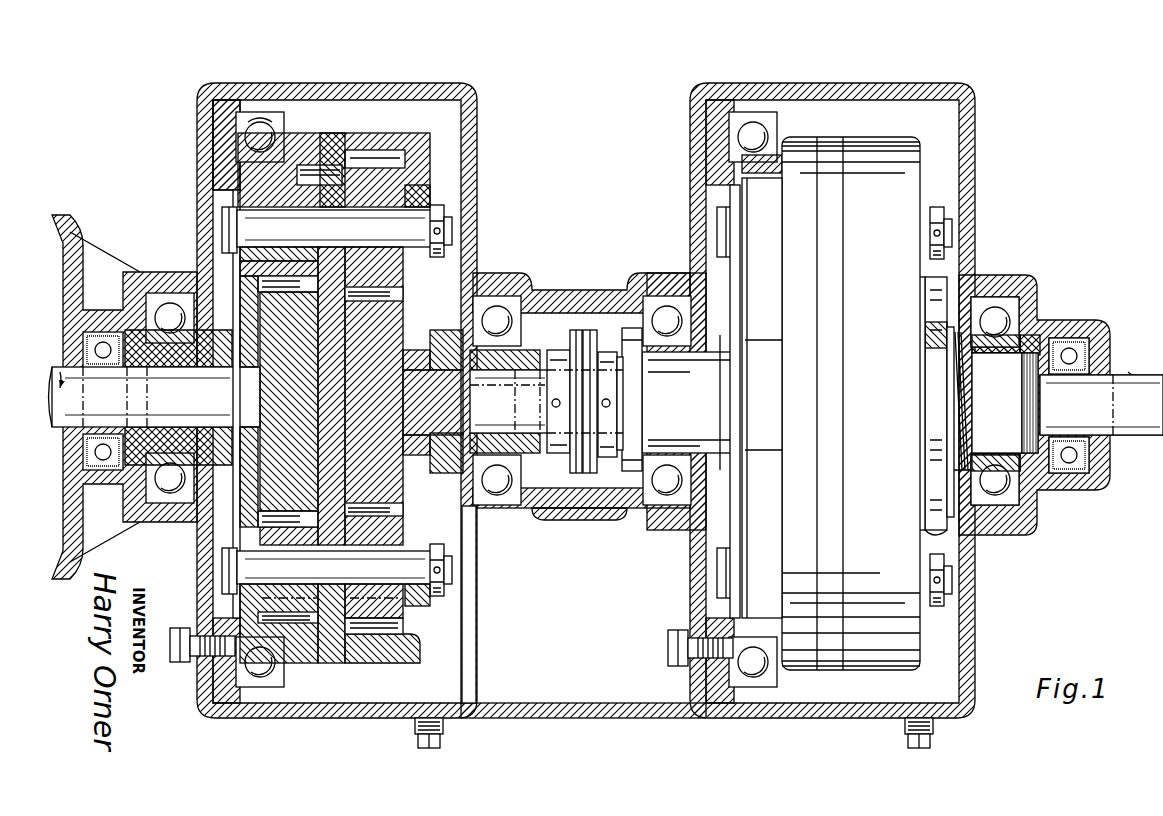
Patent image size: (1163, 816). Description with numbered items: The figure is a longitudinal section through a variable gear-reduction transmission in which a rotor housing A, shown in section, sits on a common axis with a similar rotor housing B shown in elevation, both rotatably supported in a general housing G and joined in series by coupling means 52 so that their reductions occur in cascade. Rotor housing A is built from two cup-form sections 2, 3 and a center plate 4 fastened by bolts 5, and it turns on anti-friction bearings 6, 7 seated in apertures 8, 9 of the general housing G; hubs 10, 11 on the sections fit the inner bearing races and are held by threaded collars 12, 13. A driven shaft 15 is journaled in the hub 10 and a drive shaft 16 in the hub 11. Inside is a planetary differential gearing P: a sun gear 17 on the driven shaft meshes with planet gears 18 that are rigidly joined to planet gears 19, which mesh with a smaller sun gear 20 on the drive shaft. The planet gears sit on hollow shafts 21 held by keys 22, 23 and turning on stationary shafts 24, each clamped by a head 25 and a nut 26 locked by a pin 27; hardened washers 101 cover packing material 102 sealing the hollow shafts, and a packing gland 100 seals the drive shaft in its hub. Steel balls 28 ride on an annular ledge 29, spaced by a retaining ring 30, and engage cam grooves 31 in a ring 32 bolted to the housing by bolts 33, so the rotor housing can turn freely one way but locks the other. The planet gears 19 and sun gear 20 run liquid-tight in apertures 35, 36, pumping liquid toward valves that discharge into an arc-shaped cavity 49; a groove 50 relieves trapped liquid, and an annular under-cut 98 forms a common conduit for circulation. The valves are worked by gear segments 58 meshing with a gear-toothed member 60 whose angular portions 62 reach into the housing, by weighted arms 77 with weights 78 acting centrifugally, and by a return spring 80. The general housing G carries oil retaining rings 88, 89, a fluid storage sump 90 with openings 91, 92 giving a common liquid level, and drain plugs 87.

The cup-form section 2 is at (800, 670).
The cup-form section 3 is at (405, 665).
The center plate 4 is at (828, 670).
The bolts 5 is at (955, 770).
The anti-friction bearing 6 is at (162, 526).
The anti-friction bearing 7 is at (497, 505).
The aperture 8 is at (176, 292).
The aperture 9 is at (500, 296).
The hub 10 is at (160, 365).
The hub 11 is at (497, 362).
The threaded collar 12 is at (125, 484).
The threaded collar 13 is at (540, 458).
The driven shaft 15 is at (645, 392).
The drive shaft 16 is at (816, 402).
The sun gear 17 is at (279, 401).
The planet gears 18 is at (279, 396).
The planet gears 19 is at (374, 401).
The sun gear 20 is at (374, 396).
The hollow shaft 21 is at (226, 404).
The key 22 is at (300, 636).
The key 23 is at (374, 420).
The stationary shaft 24 is at (976, 574).
The head 25 is at (222, 226).
The nut 26 is at (437, 206).
The pin 27 is at (437, 248).
The steel balls 28 is at (245, 138).
The annular ledge 29 is at (786, 186).
The retaining ring 30 is at (238, 158).
The cam grooves 31 is at (262, 120).
The ring 32 is at (215, 683).
The bolts 33 is at (172, 630).
The apertures 35 is at (410, 635).
The aperture 36 is at (407, 231).
The arc-shaped cavity 49 is at (345, 408).
The groove 50 is at (364, 332).
The coupling means 52 is at (576, 330).
The gear segments 58 is at (938, 505).
The gear-toothed member 60 is at (478, 290).
The angular portions 62 is at (925, 341).
The radially extending arms 77 is at (945, 452).
The weights 78 is at (935, 387).
The spring 80 is at (963, 370).
The plugs 87 is at (440, 740).
The oil retaining ring 88 is at (103, 332).
The oil retaining ring 89 is at (1068, 474).
The fluid storage sump 90 is at (575, 611).
The opening 91 is at (476, 638).
The opening 92 is at (702, 592).
The annular under-cut 98 is at (332, 170).
The packing gland 100 is at (433, 401).
The hardened washers 101 is at (383, 379).
The packing material 102 is at (418, 195).
The rotor housing A is at (355, 133).
The rotor housing B is at (852, 142).
The differential gearing P is at (262, 483).
The general housing G is at (564, 718).